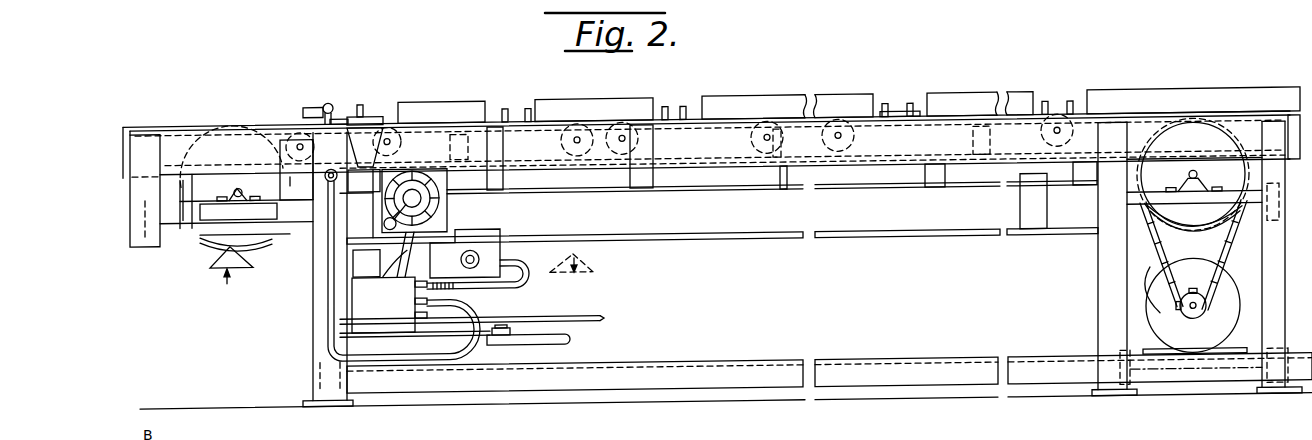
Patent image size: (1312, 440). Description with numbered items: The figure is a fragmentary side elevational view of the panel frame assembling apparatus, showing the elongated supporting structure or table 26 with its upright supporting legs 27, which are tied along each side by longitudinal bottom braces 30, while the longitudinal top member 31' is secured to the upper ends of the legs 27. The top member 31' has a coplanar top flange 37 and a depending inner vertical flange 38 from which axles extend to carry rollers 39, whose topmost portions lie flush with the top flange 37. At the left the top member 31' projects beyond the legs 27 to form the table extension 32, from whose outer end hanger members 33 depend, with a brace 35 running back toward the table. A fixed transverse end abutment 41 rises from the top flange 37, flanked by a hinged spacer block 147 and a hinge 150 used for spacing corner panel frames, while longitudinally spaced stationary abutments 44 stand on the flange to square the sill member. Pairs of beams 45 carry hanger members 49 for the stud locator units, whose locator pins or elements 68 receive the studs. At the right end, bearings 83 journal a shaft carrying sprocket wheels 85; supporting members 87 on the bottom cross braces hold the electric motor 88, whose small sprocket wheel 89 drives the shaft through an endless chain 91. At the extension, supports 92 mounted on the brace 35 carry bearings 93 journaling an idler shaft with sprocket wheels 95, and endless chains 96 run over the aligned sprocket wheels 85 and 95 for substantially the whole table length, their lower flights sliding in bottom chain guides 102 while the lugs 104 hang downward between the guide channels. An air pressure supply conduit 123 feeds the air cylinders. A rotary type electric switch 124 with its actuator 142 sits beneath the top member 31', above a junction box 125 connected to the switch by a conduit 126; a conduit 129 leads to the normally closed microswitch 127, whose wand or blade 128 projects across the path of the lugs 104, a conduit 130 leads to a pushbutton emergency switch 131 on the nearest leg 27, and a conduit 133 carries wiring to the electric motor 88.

The supporting structure or table 26 is at (915, 417).
The upright supporting legs 27 is at (312, 321).
The longitudinal bottom braces 30 is at (758, 371).
The longitudinal top member 31' is at (717, 175).
The table extension 32 is at (162, 117).
The hanger members 33 is at (128, 232).
The brace 35 is at (173, 236).
The top flanges 37 is at (897, 122).
The inner vertical flanges 38 is at (680, 178).
The rollers 39 is at (560, 150).
The transverse end abutment 41 is at (338, 112).
The stationary abutments 44 is at (447, 111).
The beams 45 is at (900, 192).
The hanger members 49 is at (1020, 229).
The locator pins or elements 68 is at (363, 110).
The bearing 83 is at (1235, 195).
The sprocket wheels 85 is at (1187, 240).
The supporting members 87 is at (1208, 392).
The electric motor 88 is at (1195, 306).
The small sprocket wheel 89 is at (1190, 309).
The endless chain 91 is at (1164, 302).
The supports 92 is at (210, 215).
The bearings 93 is at (248, 192).
The sprocket wheels 95 is at (193, 231).
The endless chains 96 is at (275, 240).
The bottom chain guides 102 is at (960, 258).
The lugs 104 is at (1193, 118).
The air pressure supply conduit 123 is at (572, 348).
The rotary type electric switch 124 is at (437, 233).
The junction box 125 is at (390, 326).
The conduit 126 is at (390, 284).
The normally closed microswitch 127 is at (492, 262).
The wand or blade 128 is at (456, 241).
The conduit 129 is at (509, 297).
The conduit 130 is at (463, 361).
The pushbutton emergency switch 131 is at (317, 260).
The conduit 133 is at (598, 326).
The actuator 142 is at (397, 180).
The spacer block 147 is at (310, 112).
The hinge 150 is at (372, 124).